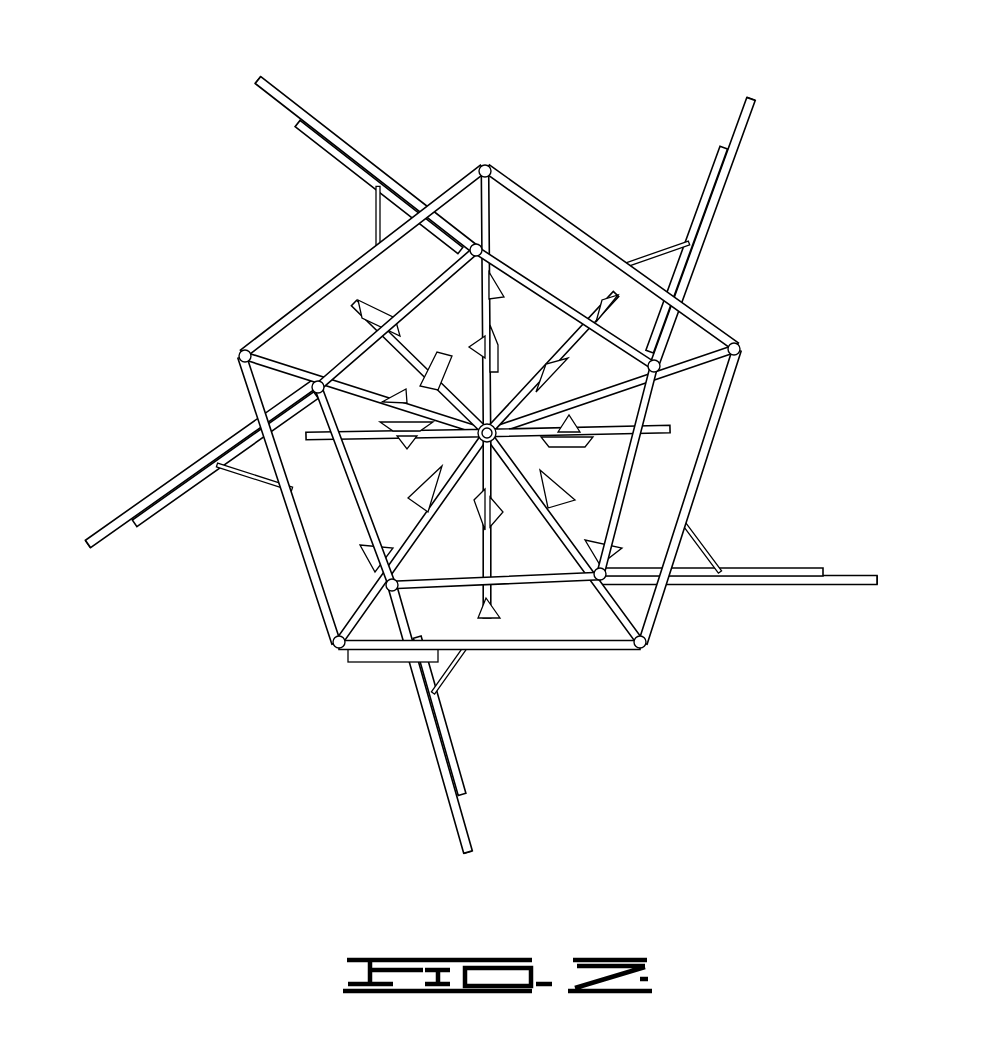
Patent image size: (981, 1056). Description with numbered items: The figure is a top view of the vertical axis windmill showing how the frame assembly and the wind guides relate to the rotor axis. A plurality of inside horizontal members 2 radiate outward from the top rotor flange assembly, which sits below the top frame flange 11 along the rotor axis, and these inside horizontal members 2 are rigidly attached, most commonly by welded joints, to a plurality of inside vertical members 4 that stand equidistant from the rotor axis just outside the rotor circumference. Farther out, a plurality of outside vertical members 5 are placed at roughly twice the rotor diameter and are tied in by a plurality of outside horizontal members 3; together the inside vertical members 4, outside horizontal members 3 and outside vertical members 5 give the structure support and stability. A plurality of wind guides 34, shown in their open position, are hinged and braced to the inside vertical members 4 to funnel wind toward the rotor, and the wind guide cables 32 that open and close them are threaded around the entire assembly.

The inside horizontal members 2 is at (488, 323).
The outside horizontal members 3 is at (299, 97).
The inside vertical members 4 is at (490, 250).
The outside vertical members 5 is at (256, 79).
The top frame flange 11 is at (518, 452).
The wind guide cables 32 is at (718, 440).
The wind guides 34 is at (334, 142).